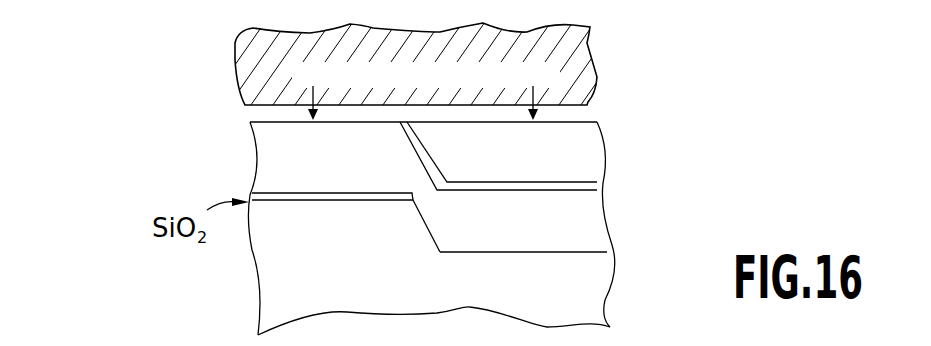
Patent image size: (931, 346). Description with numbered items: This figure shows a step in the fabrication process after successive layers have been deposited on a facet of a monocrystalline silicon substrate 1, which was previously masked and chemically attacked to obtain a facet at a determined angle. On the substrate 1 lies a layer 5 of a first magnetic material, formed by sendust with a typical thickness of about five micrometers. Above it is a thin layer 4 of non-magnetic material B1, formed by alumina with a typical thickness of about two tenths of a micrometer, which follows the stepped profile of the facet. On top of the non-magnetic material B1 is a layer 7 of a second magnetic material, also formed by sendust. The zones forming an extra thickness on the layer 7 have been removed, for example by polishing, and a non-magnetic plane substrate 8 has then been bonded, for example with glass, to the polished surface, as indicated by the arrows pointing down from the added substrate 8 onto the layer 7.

The non-magnetic plane substrate 8 is at (568, 70).
The layer of magnetic material A2 7 is at (587, 147).
The layer of non-magnetic material B1 4 is at (598, 182).
The non-magnetic material B1 is at (600, 186).
The layer of magnetic material A1 5 is at (585, 233).
The substrate 1 is at (588, 305).